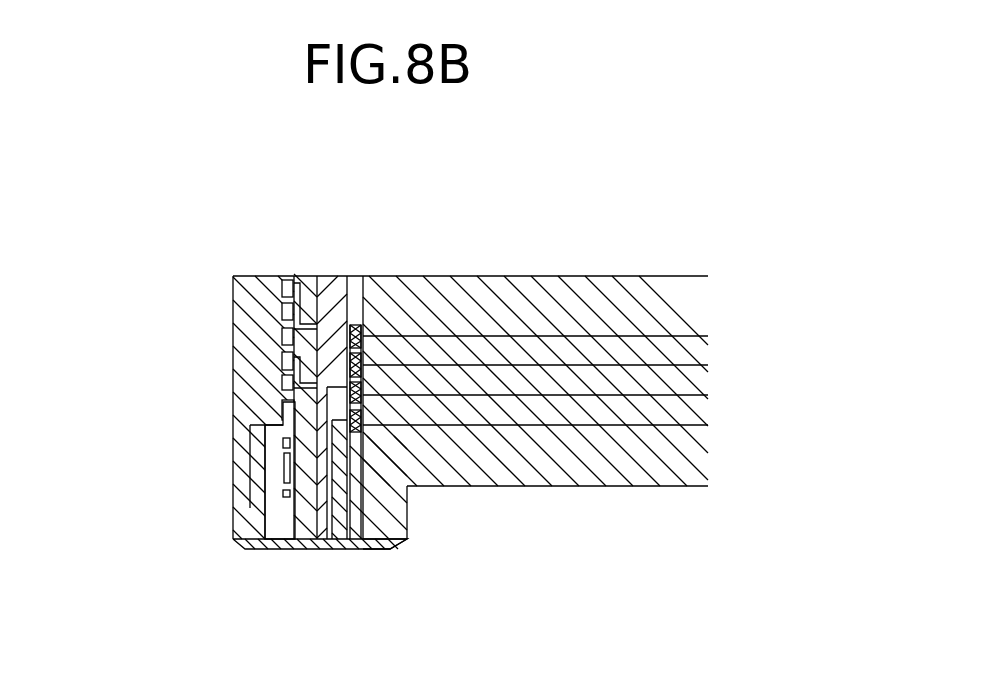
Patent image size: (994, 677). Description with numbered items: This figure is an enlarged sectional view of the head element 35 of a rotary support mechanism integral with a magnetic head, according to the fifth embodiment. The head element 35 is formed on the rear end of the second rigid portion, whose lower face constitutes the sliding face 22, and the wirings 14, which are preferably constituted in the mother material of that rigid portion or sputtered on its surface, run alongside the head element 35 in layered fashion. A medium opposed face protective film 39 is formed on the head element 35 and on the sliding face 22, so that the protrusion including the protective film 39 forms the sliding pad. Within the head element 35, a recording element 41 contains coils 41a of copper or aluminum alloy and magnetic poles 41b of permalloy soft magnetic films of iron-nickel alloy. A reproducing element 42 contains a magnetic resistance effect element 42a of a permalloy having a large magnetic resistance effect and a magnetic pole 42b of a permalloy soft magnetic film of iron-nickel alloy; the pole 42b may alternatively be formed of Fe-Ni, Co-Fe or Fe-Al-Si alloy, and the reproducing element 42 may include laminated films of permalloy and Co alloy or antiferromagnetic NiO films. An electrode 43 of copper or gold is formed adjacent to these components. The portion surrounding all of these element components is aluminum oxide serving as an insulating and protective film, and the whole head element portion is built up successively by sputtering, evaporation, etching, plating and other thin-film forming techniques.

The wirings 14 is at (602, 425).
The sliding face 22 is at (233, 540).
The head element 35 is at (360, 260).
The medium opposed face protective film 39 is at (319, 549).
The recording element 41 is at (110, 383).
The coils 41a is at (262, 427).
The magnetic poles 41b is at (268, 515).
The reproducing element 42 is at (542, 500).
The magnetic resistance effect element 42a is at (405, 542).
The magnetic pole 42b is at (400, 510).
The electrode 43 is at (342, 289).